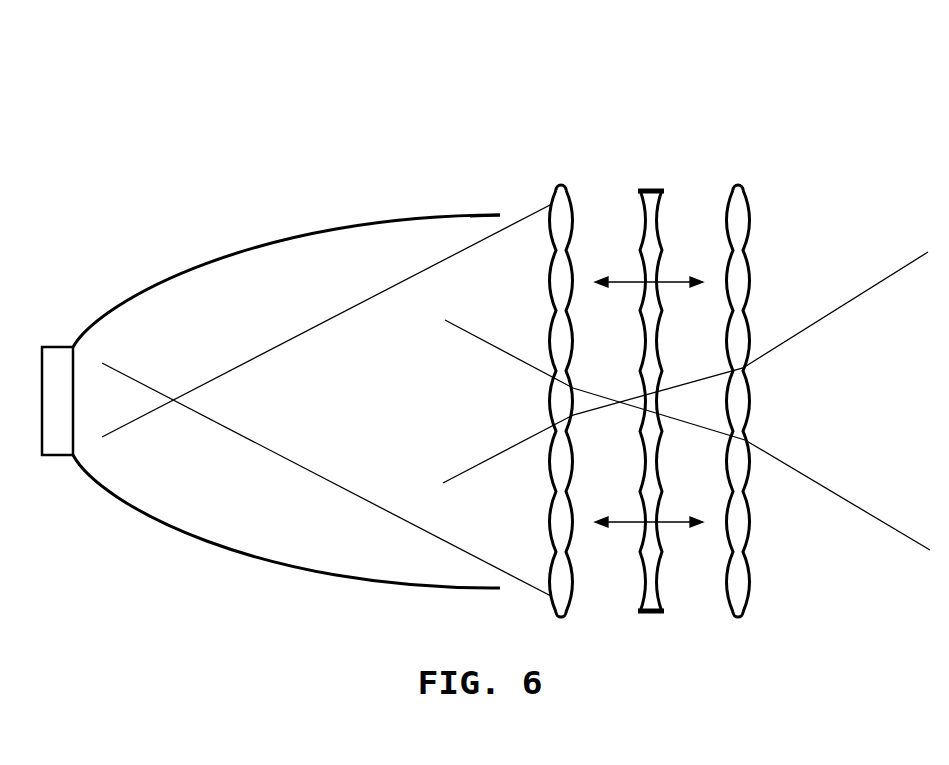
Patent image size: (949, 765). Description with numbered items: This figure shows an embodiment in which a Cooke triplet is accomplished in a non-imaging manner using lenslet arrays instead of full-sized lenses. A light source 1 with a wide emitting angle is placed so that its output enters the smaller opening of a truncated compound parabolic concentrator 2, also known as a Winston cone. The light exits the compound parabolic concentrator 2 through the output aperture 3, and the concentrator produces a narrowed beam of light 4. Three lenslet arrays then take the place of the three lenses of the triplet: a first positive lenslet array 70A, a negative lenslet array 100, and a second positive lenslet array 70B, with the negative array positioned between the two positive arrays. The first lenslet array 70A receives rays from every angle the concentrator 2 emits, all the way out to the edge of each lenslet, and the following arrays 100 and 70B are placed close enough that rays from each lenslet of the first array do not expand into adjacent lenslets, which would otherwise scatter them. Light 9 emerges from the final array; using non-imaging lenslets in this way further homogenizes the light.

The light source 1 is at (61, 340).
The compound parabolic concentrator 2 is at (246, 237).
The output aperture 3 is at (498, 200).
The narrowed beam of light 4 is at (527, 205).
The first positive lenslet array 70A is at (565, 188).
The negative lenslet array 100 is at (645, 188).
The second positive lenslet array 70B is at (740, 186).
The output light rays 9 is at (853, 288).